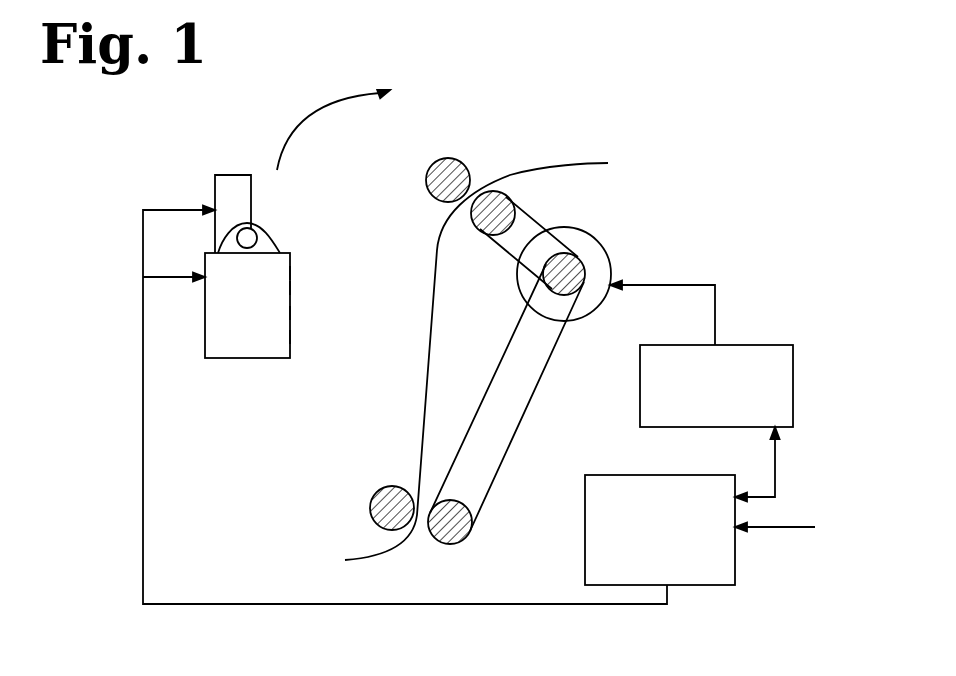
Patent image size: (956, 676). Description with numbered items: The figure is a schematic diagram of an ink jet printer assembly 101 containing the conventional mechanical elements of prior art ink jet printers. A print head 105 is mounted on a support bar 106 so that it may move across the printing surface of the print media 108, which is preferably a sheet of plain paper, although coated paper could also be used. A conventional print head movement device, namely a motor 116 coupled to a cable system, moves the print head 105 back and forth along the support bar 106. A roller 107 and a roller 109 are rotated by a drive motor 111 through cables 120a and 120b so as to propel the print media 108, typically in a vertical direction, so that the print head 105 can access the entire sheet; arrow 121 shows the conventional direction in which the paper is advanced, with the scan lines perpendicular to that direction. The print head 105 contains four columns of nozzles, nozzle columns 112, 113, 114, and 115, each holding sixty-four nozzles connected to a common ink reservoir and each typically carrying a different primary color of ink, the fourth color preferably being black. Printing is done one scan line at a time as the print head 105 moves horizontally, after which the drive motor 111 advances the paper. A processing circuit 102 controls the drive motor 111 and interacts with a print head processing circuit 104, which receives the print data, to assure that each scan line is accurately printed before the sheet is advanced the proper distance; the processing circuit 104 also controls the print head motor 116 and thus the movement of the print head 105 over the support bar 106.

The ink jet printer assembly 101 is at (703, 127).
The processing circuit 102 is at (701, 354).
The print head processing circuit 104 is at (718, 506).
The print head 105 is at (288, 290).
The support bar 106 is at (237, 238).
The roller 107 is at (442, 158).
The print media 108 is at (585, 160).
The roller 109 is at (510, 196).
The drive motor 111 is at (597, 263).
The nozzle column 112 is at (290, 273).
The nozzle column 113 is at (290, 288).
The nozzle column 114 is at (290, 313).
The nozzle column 115 is at (290, 337).
The motor 116 is at (238, 188).
The cable 120a is at (554, 216).
The cable 120b is at (549, 399).
The arrow 121 is at (328, 100).